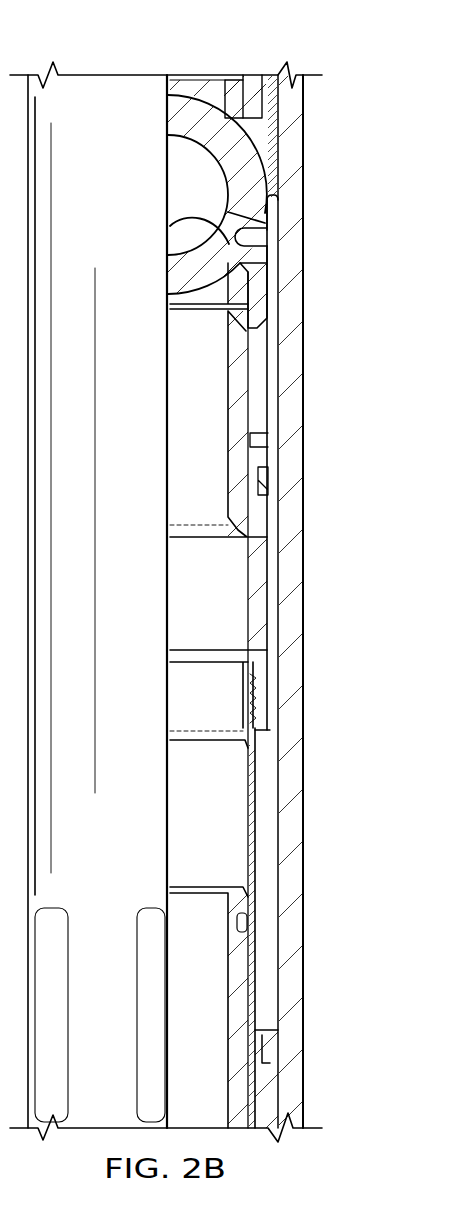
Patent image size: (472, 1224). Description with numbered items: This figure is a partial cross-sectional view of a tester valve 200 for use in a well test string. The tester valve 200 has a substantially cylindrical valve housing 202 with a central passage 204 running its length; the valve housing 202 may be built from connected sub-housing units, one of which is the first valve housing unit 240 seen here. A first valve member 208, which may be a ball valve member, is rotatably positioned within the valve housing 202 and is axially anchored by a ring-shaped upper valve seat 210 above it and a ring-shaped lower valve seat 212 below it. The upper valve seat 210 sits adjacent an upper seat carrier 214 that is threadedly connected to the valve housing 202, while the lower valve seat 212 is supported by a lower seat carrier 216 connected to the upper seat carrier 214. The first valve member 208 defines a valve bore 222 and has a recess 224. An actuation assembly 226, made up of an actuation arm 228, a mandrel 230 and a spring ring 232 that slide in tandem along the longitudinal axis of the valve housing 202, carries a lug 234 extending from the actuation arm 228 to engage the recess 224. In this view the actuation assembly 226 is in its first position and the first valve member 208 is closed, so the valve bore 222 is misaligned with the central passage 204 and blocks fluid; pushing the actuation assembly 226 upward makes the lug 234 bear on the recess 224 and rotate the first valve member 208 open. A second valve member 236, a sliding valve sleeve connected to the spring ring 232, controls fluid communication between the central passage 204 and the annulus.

The tester valve 200 is at (128, 57).
The valve housing 202 is at (304, 508).
The central passage 204 is at (189, 822).
The first valve member 208 is at (178, 113).
The upper valve seat 210 is at (233, 90).
The lower valve seat 212 is at (228, 294).
The upper seat carrier 214 is at (255, 86).
The lower seat carrier 216 is at (238, 400).
The valve bore 222 is at (178, 150).
The recess 224 is at (172, 224).
The actuation assembly 226 is at (275, 358).
The actuation arm 228 is at (270, 256).
The mandrel 230 is at (252, 608).
The spring ring 232 is at (252, 815).
The lug 234 is at (279, 230).
The second valve member 236 is at (240, 968).
The first valve housing unit 240 is at (297, 149).